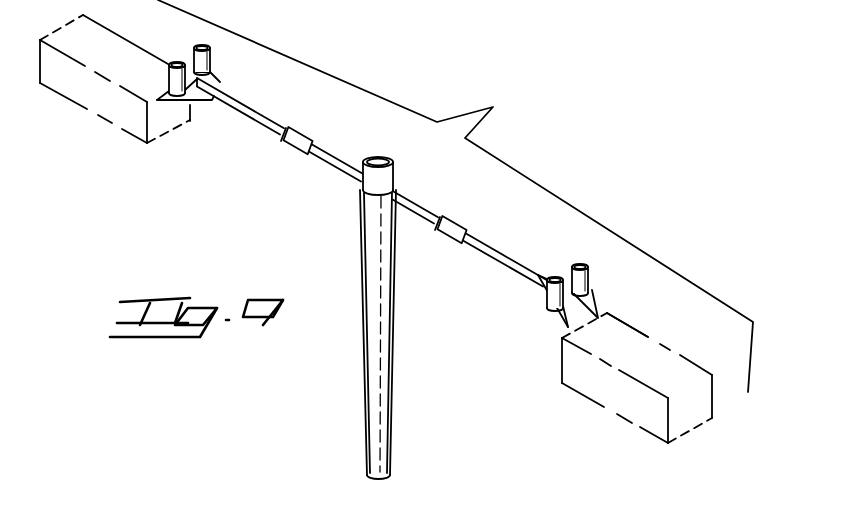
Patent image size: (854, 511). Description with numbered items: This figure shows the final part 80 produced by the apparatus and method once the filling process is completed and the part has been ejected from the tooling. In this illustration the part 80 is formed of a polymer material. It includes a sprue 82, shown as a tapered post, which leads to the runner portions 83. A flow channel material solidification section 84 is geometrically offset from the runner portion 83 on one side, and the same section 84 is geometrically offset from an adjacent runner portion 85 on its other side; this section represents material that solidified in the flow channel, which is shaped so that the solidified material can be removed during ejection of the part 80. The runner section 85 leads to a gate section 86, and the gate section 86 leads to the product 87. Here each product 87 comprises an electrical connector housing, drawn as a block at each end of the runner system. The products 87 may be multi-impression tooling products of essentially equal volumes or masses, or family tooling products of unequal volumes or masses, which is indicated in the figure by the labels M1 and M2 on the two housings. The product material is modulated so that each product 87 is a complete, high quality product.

The final part 80 is at (455, 196).
The sprue 82 is at (390, 300).
The runner portion 83 is at (422, 203).
The flow channel material solidification section 84 is at (458, 217).
The runner portion 85 is at (502, 252).
The gate section 86 is at (598, 298).
The product 87 is at (648, 353).
The product mass M1 is at (88, 105).
The product mass M2 is at (598, 388).